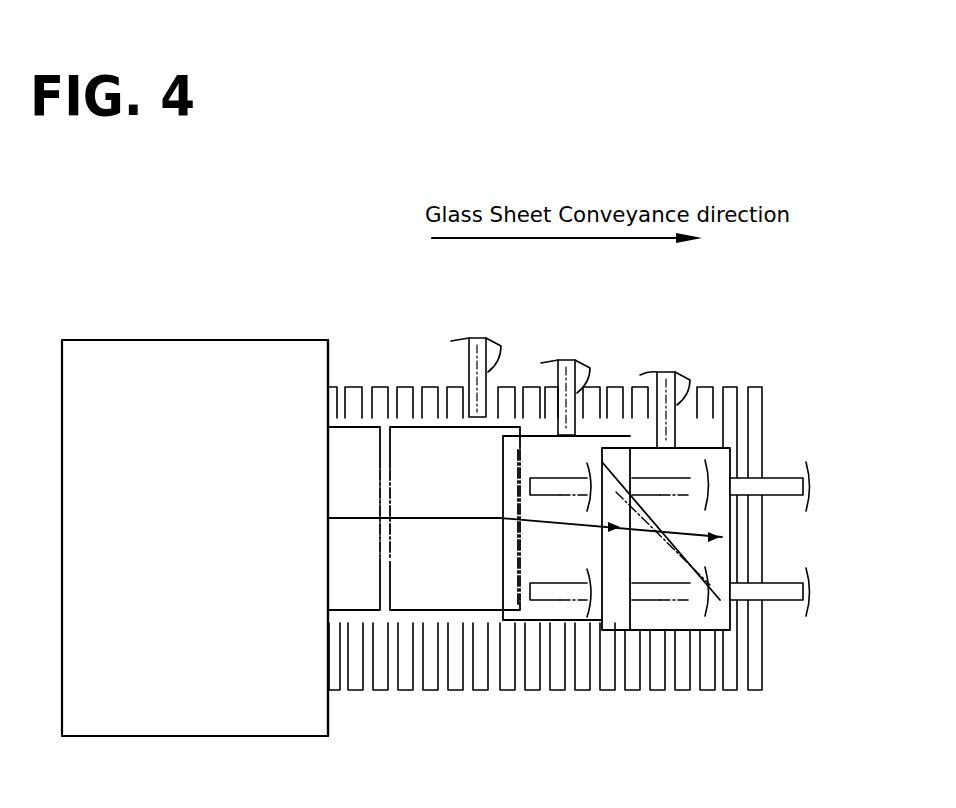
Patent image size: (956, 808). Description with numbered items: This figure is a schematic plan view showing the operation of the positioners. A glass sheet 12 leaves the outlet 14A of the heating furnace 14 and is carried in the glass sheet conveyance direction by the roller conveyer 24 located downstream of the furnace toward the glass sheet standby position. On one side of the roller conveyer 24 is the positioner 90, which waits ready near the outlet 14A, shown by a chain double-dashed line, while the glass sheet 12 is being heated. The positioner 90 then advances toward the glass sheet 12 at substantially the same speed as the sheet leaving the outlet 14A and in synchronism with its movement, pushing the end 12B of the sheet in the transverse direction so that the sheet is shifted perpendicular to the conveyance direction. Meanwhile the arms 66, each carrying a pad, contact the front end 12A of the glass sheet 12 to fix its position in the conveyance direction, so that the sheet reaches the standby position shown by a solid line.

The heating furnace 14 is at (209, 335).
The outlet 14A is at (331, 576).
The glass sheet 12 is at (357, 436).
The front end 12A is at (733, 513).
The end in the transverse direction 12B is at (537, 436).
The roller conveyer 24 is at (378, 398).
The positioner 90 is at (499, 360).
The arm 66 is at (565, 476).